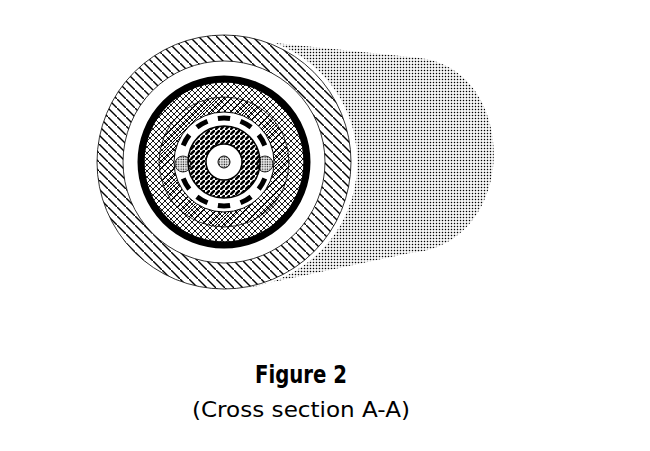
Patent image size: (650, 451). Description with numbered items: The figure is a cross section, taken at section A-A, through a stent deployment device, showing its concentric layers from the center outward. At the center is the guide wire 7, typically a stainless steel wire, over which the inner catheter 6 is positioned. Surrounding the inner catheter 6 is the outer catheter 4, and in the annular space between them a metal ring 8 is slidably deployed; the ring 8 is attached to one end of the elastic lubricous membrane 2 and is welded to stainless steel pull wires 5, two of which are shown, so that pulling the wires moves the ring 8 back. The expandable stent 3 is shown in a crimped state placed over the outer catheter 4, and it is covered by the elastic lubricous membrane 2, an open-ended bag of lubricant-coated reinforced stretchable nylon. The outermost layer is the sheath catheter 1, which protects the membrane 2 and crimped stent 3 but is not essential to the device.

The sheath catheter 1 is at (298, 262).
The elastic lubricous membrane 2 is at (307, 200).
The stent 3 is at (162, 208).
The outer catheter 4 is at (160, 163).
The pull wires 5 is at (272, 166).
The inner catheter 6 is at (250, 187).
The guide wire 7 is at (224, 160).
The ring 8 is at (192, 143).